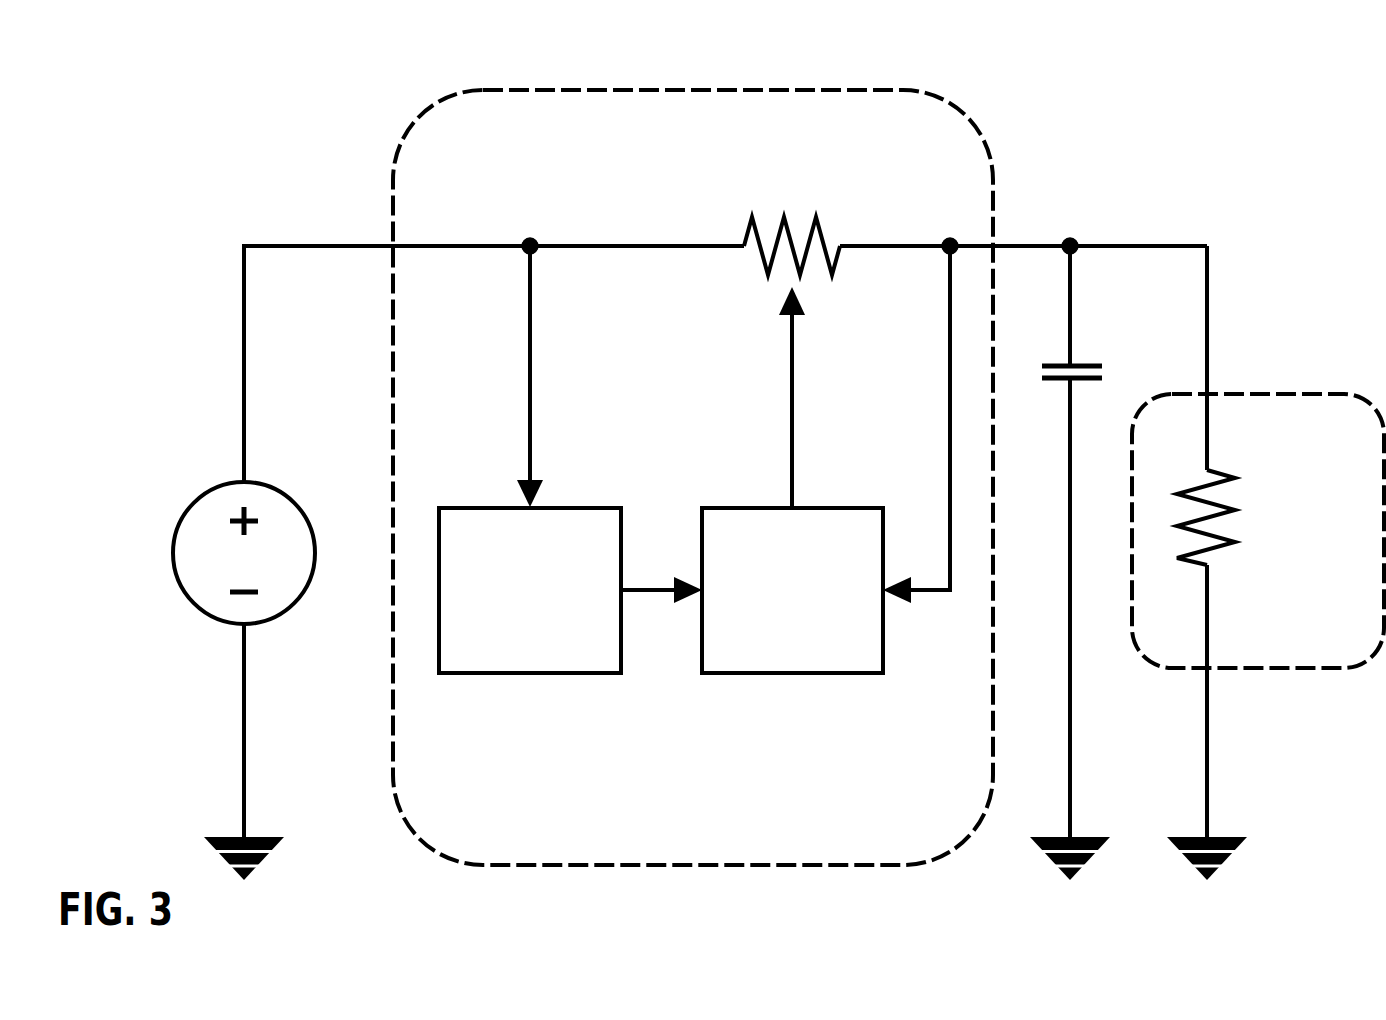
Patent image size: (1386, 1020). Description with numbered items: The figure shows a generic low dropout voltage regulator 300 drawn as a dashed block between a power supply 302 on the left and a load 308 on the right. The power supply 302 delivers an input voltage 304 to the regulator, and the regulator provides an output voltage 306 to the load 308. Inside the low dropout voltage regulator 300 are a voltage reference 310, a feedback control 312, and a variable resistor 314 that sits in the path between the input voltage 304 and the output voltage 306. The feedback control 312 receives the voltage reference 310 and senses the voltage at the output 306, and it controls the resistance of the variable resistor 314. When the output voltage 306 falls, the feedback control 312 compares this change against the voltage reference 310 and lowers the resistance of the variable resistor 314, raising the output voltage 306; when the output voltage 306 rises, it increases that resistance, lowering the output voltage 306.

The low dropout voltage regulator 300 is at (662, 90).
The power supply 302 is at (183, 657).
The input voltage 304 is at (494, 306).
The output voltage 306 is at (1023, 506).
The load 308 is at (1293, 488).
The voltage reference 310 is at (499, 638).
The feedback control 312 is at (761, 638).
The variable resistor 314 is at (949, 195).